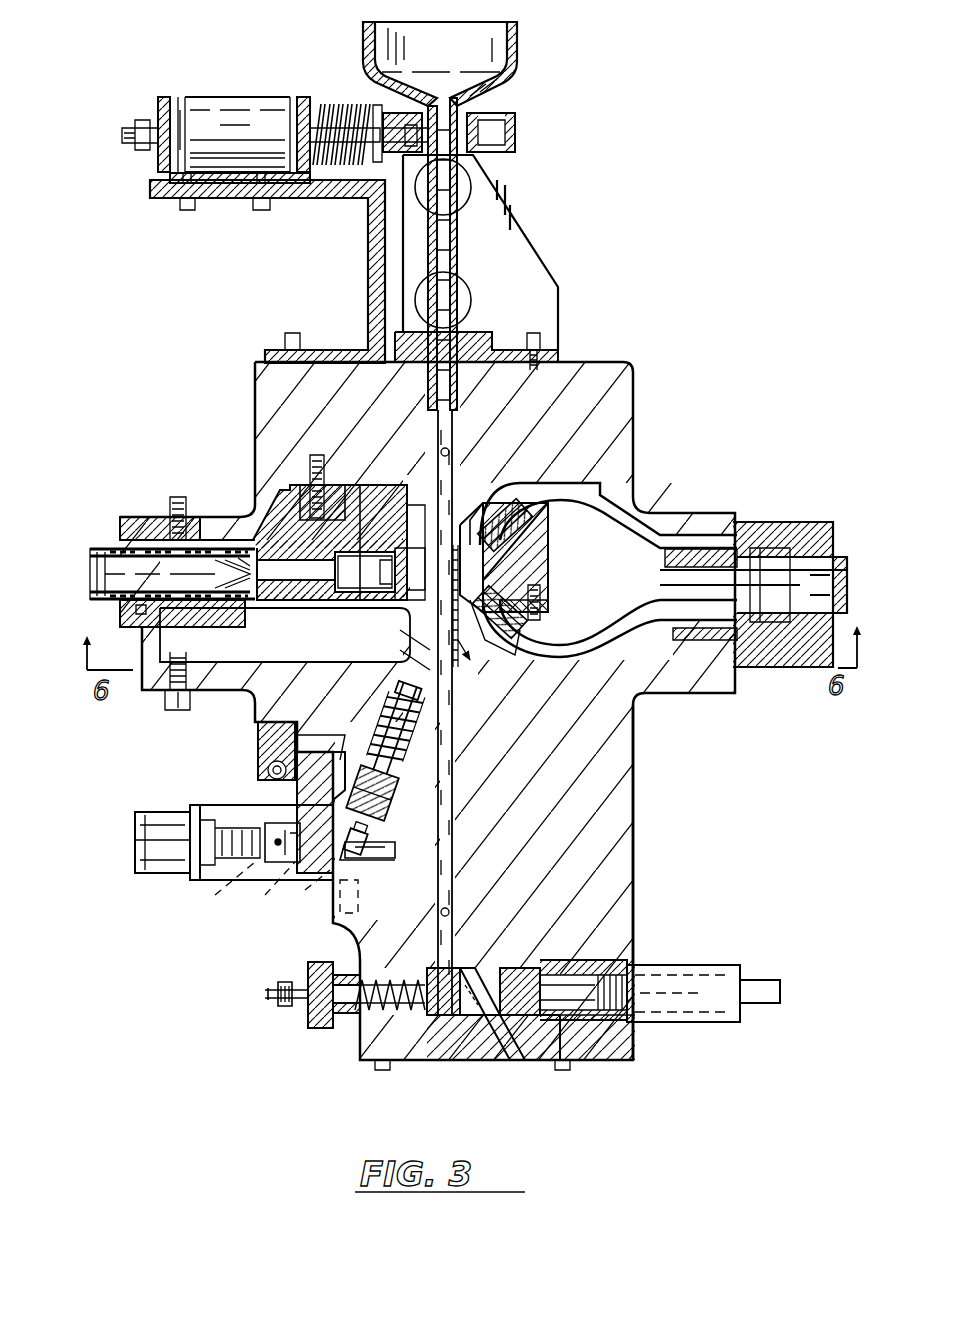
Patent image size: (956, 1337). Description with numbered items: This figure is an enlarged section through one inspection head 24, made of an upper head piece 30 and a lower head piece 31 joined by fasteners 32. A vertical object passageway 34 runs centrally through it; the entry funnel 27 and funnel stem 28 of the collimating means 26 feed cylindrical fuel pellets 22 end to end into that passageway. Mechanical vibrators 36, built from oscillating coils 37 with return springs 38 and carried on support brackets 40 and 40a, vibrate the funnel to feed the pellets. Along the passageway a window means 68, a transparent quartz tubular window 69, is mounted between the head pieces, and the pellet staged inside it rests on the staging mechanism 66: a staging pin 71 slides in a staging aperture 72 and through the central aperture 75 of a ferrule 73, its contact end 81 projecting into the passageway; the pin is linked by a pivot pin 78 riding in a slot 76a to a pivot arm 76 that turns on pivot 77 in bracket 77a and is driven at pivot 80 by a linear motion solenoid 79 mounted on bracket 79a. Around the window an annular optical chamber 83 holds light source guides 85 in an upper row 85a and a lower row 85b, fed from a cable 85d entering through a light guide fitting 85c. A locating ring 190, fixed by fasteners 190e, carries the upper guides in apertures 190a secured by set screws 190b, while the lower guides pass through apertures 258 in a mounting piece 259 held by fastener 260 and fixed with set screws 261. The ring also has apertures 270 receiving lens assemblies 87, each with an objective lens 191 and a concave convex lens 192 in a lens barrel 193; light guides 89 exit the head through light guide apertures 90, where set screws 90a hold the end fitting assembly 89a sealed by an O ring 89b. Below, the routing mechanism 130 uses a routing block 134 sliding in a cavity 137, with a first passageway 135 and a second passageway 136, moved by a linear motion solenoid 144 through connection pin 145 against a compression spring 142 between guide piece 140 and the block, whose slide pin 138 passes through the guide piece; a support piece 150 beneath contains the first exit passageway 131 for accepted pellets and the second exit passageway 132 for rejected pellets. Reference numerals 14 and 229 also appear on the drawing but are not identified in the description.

The valve member 14 is at (340, 727).
The cylindrical fuel pellets 22 is at (452, 288).
The inspection head 24 is at (196, 392).
The collimating means 26 is at (482, 54).
The entry funnel 27 is at (522, 30).
The funnel stem 28 is at (462, 303).
The upper head piece 30 is at (625, 393).
The lower head piece 31 is at (635, 814).
The fasteners 32 is at (175, 713).
The object passageway 34 is at (450, 447).
The mechanical vibrators 36 is at (216, 107).
The oscillating coils 37 is at (238, 100).
The return springs 38 is at (318, 100).
The support bracket 40 is at (368, 258).
The support bracket 40a is at (540, 272).
The staging mechanism 66 is at (278, 827).
The window means 68 is at (549, 568).
The tubular window 69 is at (406, 596).
The staging pin 71 is at (394, 661).
The staging aperture 72 is at (372, 768).
The ferrule 73 is at (372, 793).
The central aperture 75 is at (325, 805).
The pivot arm 76 is at (215, 898).
The slot 76a is at (370, 860).
The pivot 77 is at (268, 766).
The bracket 77a is at (272, 741).
The pivot pin 78 is at (357, 838).
The linear motion solenoid 79 is at (148, 818).
The bracket 79a is at (225, 806).
The pivot 80 is at (275, 870).
The contact end 81 is at (442, 702).
The optical chamber 83 is at (410, 635).
The light source guides 85 is at (668, 589).
The upper row of light guides 85a is at (548, 489).
The lower row of light guides 85b is at (546, 690).
The light guide fitting 85c is at (790, 669).
The light guide cable 85d is at (838, 548).
The lens assemblies 87 is at (410, 514).
The light guides 89 is at (100, 548).
The light guide end fitting assembly 89a is at (143, 524).
The O ring seal 89b is at (145, 616).
The light guide apertures 90 is at (187, 550).
The set screws 90a is at (178, 497).
The routing mechanism 130 is at (506, 1013).
The first exit passageway 131 is at (440, 1062).
The second exit passageway 132 is at (516, 1062).
The routing block 134 is at (555, 961).
The first passageway 135 is at (455, 952).
The second passageway 136 is at (500, 966).
The cavity 137 is at (583, 1012).
The routing block slide pin 138 is at (290, 1001).
The guide piece 140 is at (318, 1030).
The biasing compression spring 142 is at (358, 1012).
The linear motion solenoid 144 is at (696, 976).
The connection pin 145 is at (560, 976).
The support piece 150 is at (466, 1062).
The locating ring 190 is at (348, 488).
The apertures 190a is at (500, 486).
The set screws 190b is at (527, 554).
The fasteners 190e is at (310, 462).
The objective lens 191 is at (420, 516).
The concave convex lens 192 is at (370, 552).
The lens barrel 193 is at (360, 572).
The nozzle tip 229 is at (468, 520).
The apertures 258 is at (510, 657).
The mounting piece 259 is at (540, 602).
The fastener 260 is at (572, 657).
The set screws 261 is at (468, 652).
The apertures 270 is at (332, 606).